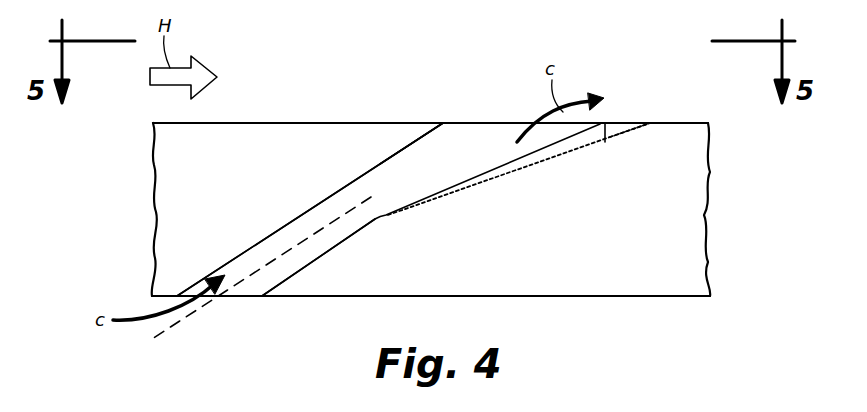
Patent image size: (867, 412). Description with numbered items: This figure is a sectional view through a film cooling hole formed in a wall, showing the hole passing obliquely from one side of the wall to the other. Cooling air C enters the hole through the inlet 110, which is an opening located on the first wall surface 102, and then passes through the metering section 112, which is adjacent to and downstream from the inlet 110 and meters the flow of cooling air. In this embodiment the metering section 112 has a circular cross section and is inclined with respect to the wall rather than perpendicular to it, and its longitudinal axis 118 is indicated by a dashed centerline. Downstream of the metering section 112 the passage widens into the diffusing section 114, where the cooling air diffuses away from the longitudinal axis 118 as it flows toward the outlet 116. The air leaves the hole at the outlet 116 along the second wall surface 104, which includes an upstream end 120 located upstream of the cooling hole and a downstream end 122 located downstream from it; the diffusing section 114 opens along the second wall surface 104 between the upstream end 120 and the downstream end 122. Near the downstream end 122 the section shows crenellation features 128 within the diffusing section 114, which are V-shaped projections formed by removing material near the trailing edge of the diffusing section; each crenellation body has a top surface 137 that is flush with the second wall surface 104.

The first wall surface 102 is at (688, 297).
The second wall surface 104 is at (697, 122).
The inlet 110 is at (252, 297).
The metering section 112 is at (259, 235).
The diffusing section 114 is at (420, 153).
The outlet 116 is at (487, 122).
The longitudinal axis 118 is at (178, 322).
The upstream end 120 is at (435, 122).
The downstream end 122 is at (670, 122).
The crenellation features 128 is at (624, 110).
The top surface 137 is at (637, 122).